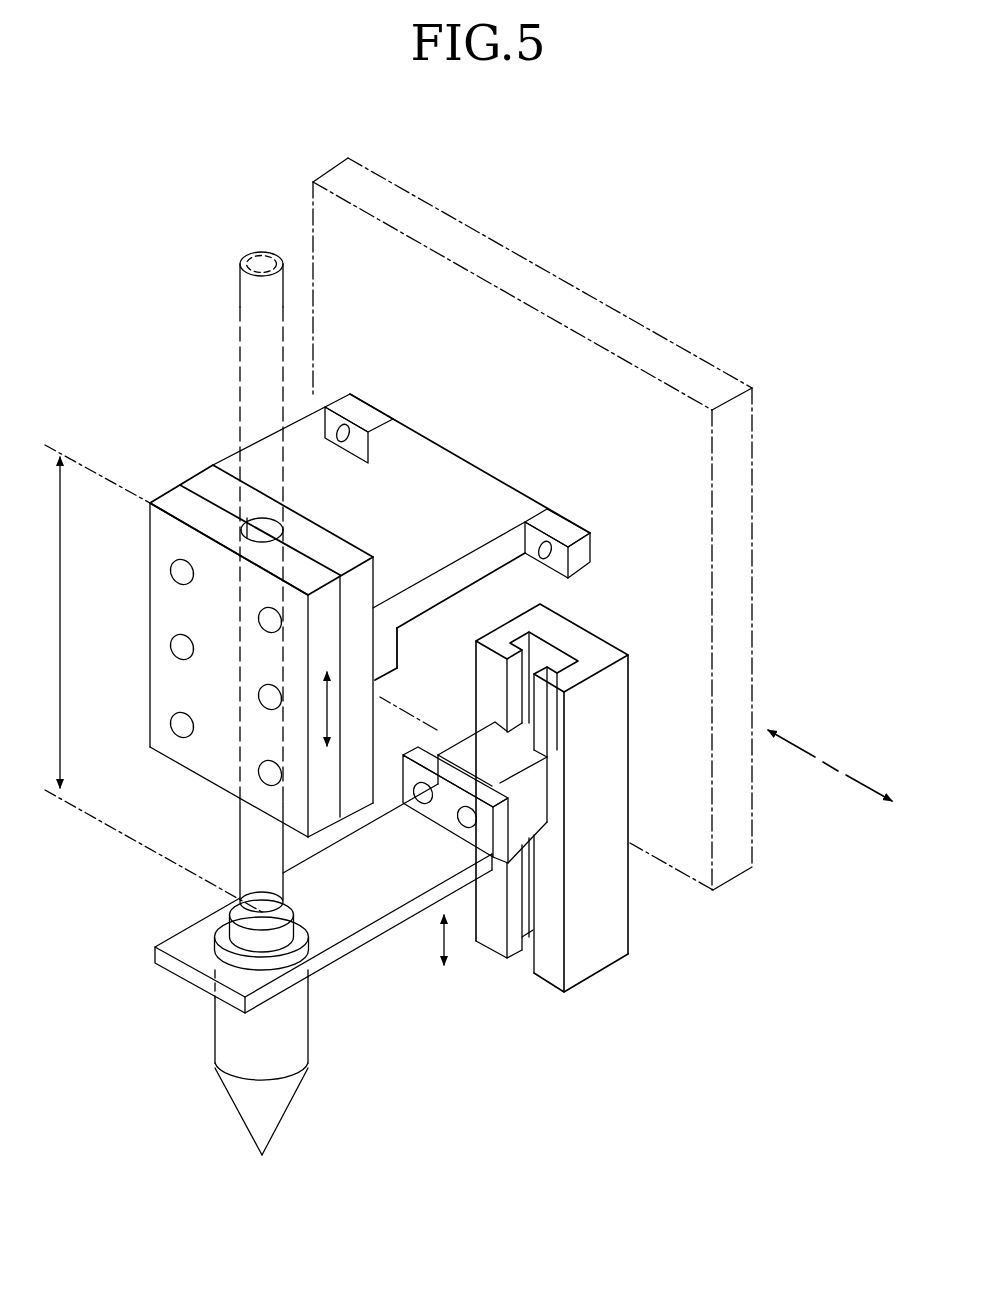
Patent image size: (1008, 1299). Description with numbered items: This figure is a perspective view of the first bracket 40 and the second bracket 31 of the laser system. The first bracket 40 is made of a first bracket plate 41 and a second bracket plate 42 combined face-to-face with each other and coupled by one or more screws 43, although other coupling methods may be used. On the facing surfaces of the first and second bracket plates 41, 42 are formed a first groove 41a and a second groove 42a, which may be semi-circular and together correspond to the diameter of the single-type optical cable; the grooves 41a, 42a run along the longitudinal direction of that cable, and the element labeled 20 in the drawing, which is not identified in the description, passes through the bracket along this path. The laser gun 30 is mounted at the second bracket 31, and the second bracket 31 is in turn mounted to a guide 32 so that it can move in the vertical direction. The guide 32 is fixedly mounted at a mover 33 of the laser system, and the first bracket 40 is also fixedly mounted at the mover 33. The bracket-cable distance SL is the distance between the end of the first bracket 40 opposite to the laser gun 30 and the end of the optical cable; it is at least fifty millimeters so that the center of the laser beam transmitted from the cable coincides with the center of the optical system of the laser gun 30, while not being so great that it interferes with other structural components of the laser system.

The guide rod 20 is at (238, 292).
The laser gun 30 is at (272, 1098).
The second bracket 31 is at (357, 915).
The guide 32 is at (613, 920).
The mover 33 is at (752, 481).
The first bracket 40 is at (329, 615).
The first bracket plate 41 is at (220, 651).
The first groove 41a is at (247, 524).
The second bracket plate 42 is at (401, 537).
The second groove 42a is at (270, 520).
The screws 43 is at (175, 737).
The bracket-cable distance SL is at (142, 678).